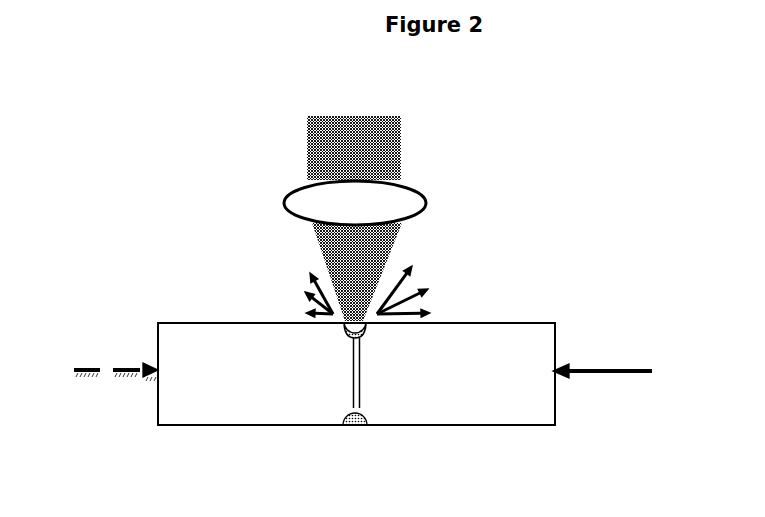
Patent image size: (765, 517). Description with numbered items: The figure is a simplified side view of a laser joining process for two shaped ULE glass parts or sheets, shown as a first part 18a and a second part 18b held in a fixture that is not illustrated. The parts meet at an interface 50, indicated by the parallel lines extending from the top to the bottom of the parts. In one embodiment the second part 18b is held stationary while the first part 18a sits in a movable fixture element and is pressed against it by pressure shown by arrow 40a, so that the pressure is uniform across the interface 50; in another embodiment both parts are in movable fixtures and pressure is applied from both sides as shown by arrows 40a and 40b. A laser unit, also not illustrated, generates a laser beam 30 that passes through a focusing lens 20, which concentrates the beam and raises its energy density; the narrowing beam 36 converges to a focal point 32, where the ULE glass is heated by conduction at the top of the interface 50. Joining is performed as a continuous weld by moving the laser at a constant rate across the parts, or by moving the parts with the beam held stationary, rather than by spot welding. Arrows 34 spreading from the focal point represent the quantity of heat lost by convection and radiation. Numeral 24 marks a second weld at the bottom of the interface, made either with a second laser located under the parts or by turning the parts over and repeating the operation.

The focusing lens 20 is at (444, 192).
The laser beam 30 is at (347, 119).
The laser beam 36 is at (316, 156).
The heat loss arrows 34 is at (364, 290).
The focal point 32 is at (365, 335).
The first ULE part 18a is at (432, 417).
The second ULE part 18b is at (245, 417).
The second weld 24 is at (363, 439).
The applied pressure arrow 40a is at (602, 354).
The applied pressure arrow 40b is at (100, 380).
The interface 50 is at (376, 374).